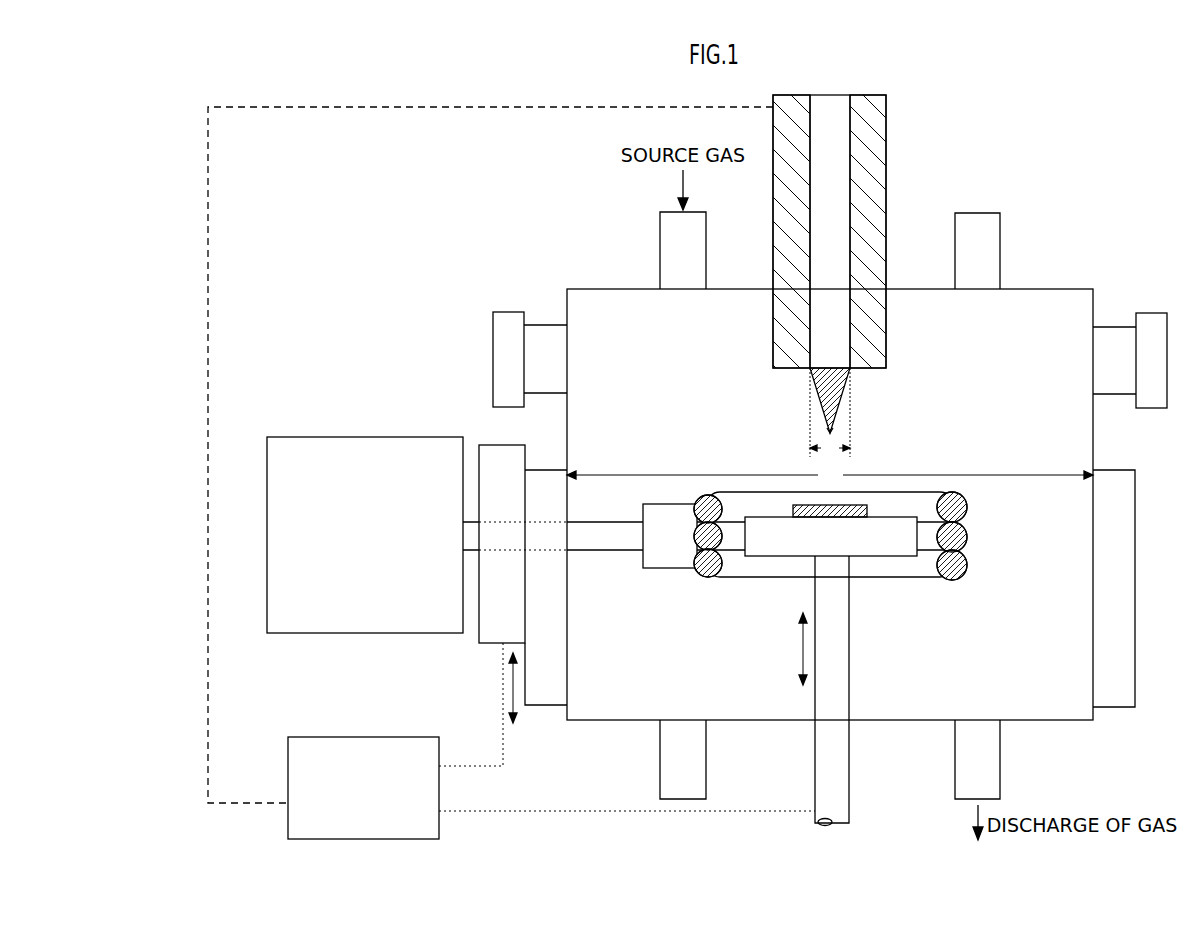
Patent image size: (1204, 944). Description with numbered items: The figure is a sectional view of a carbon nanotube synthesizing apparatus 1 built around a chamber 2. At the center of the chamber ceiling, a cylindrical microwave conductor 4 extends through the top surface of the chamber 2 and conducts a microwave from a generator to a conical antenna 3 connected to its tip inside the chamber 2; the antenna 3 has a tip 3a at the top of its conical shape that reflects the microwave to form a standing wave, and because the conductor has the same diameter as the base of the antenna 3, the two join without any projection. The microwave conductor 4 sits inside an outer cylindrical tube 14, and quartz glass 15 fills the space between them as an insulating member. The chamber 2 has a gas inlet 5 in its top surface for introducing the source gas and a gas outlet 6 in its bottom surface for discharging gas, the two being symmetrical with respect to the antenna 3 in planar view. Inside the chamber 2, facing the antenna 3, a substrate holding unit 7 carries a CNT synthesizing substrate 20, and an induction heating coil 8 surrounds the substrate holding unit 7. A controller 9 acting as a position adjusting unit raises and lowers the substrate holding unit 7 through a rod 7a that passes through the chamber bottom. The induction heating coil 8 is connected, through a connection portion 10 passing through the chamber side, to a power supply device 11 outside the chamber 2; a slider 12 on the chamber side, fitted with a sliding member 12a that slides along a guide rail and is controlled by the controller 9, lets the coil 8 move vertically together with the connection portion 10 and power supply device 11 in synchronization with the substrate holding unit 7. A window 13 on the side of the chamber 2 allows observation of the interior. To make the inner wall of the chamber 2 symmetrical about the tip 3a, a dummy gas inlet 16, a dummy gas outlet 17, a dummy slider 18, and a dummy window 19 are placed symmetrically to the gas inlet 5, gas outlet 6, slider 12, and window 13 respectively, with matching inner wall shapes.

The carbon nanotube synthesizing apparatus 1 is at (455, 165).
The chamber 2 is at (1075, 290).
The conical antenna 3 is at (821, 413).
The tip 3a is at (824, 432).
The microwave conductor 4 is at (866, 231).
The gas inlet 5 is at (706, 242).
The gas outlet 6 is at (1000, 747).
The substrate holding unit 7 is at (849, 659).
The rod 7a is at (849, 657).
The induction heating coil 8 is at (968, 508).
The controller 9 is at (362, 737).
The connection portion 10 is at (601, 521).
The power supply device 11 is at (362, 437).
The slider 12 is at (554, 706).
The sliding member 12a is at (500, 646).
The window 13 is at (507, 312).
The outer cylindrical tube 14 is at (887, 166).
The quartz glass 15 is at (875, 226).
The dummy gas inlet 16 is at (1000, 243).
The dummy gas outlet 17 is at (706, 745).
The dummy slider 18 is at (1117, 708).
The dummy window 19 is at (1153, 320).
The CNT synthesizing substrate 20 is at (788, 511).